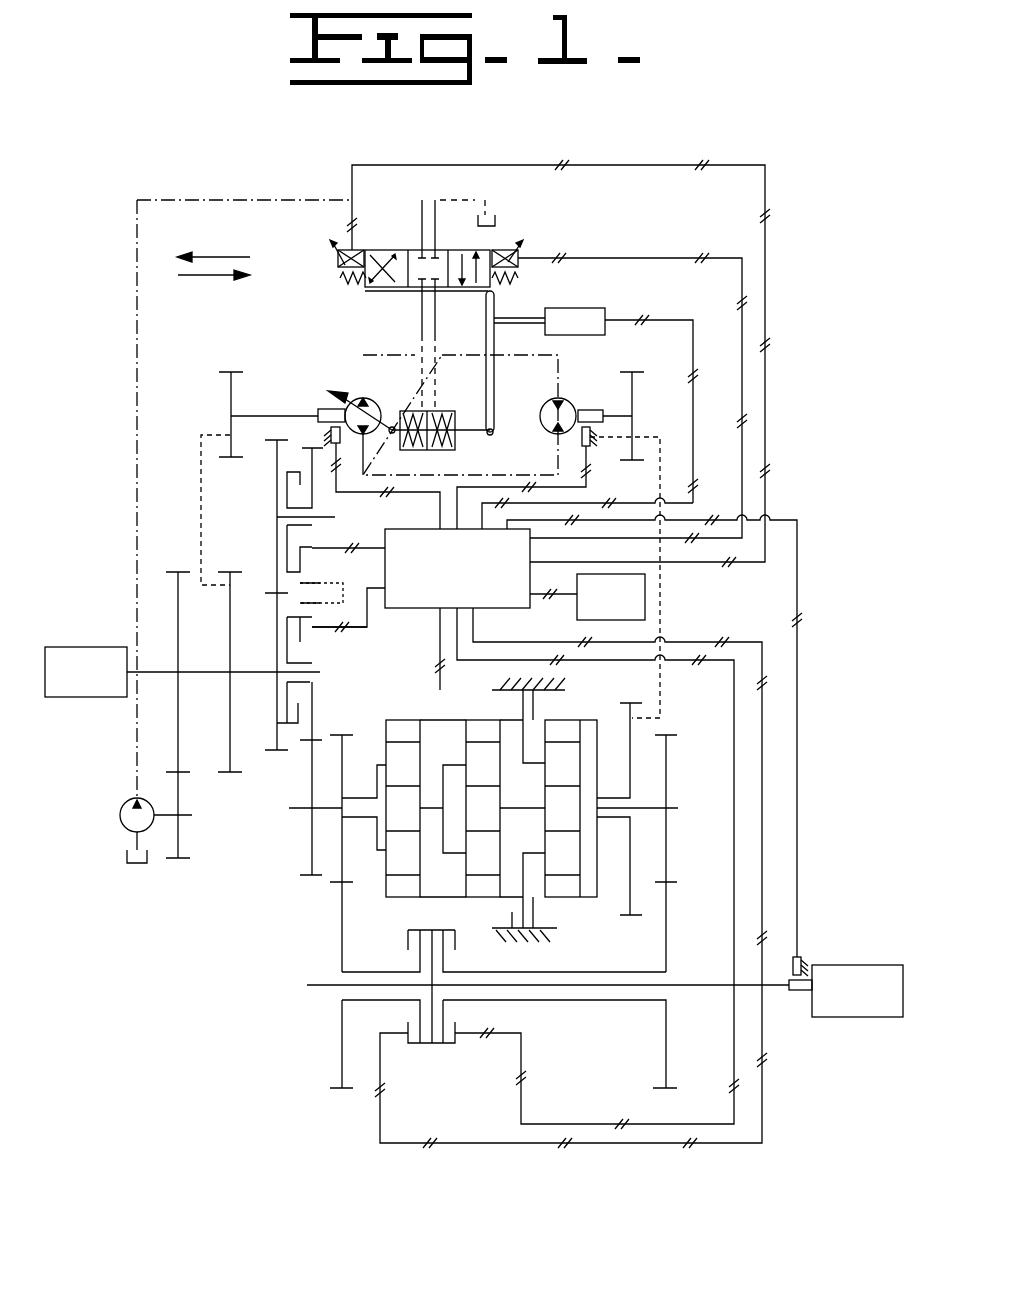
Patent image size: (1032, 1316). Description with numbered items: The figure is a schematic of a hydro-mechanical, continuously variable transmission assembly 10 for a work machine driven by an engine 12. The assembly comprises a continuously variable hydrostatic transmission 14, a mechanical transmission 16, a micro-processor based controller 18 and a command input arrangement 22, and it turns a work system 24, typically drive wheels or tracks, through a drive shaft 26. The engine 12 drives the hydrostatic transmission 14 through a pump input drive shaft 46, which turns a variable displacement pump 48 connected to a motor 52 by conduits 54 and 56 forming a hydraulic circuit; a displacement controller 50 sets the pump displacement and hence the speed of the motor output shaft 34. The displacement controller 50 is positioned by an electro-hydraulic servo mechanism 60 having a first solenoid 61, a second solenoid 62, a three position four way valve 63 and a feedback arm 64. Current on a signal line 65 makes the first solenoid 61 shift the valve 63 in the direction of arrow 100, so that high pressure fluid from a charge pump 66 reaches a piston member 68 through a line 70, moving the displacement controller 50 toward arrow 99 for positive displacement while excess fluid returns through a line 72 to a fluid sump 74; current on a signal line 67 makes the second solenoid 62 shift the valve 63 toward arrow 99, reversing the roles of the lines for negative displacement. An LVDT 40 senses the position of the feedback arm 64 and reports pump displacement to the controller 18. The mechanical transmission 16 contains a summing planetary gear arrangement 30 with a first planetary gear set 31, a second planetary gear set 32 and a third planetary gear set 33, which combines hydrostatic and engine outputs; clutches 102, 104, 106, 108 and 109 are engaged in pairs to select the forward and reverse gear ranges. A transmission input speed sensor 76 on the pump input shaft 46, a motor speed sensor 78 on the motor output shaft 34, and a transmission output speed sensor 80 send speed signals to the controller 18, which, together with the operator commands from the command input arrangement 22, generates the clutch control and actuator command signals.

The transmission assembly 10 is at (162, 125).
The engine 12 is at (72, 647).
The continuously variable hydrostatic transmission 14 is at (622, 360).
The mechanical transmission 16 is at (215, 946).
The controller 18 is at (413, 608).
The command input arrangement 22 is at (577, 612).
The work system 24 is at (870, 965).
The drive shaft 26 is at (313, 985).
The summing planetary gear arrangement 30 is at (392, 690).
The first planetary gear set 31 is at (398, 898).
The second planetary gear set 32 is at (475, 898).
The third planetary gear set 33 is at (583, 900).
The motor output shaft 34 is at (580, 410).
The LVDT 40 is at (607, 312).
The pump input drive shaft 46 is at (322, 407).
The variable displacement pump 48 is at (374, 398).
The displacement controller 50 is at (392, 437).
The motor 52 is at (546, 403).
The conduit 54 is at (567, 363).
The conduit 56 is at (505, 467).
The electro-hydraulic servo mechanism 60 is at (308, 338).
The first solenoid 61 is at (338, 260).
The second solenoid 62 is at (522, 265).
The three position four way valve 63 is at (362, 285).
The feedback arm 64 is at (497, 304).
The signal line 65 is at (608, 167).
The charge pump 66 is at (122, 825).
The signal line 67 is at (640, 258).
The piston member 68 is at (430, 410).
The line 70 is at (439, 328).
The line 72 is at (425, 335).
The fluid sump 74 is at (497, 220).
The transmission input speed sensor 76 is at (330, 433).
The motor speed sensor 78 is at (594, 434).
The transmission output speed sensor 80 is at (800, 957).
The arrow 99 is at (229, 258).
The arrow 100 is at (200, 278).
The clutch 102 is at (535, 706).
The clutch 104 is at (403, 945).
The clutch 106 is at (458, 944).
The clutch 108 is at (276, 475).
The clutch 109 is at (278, 710).